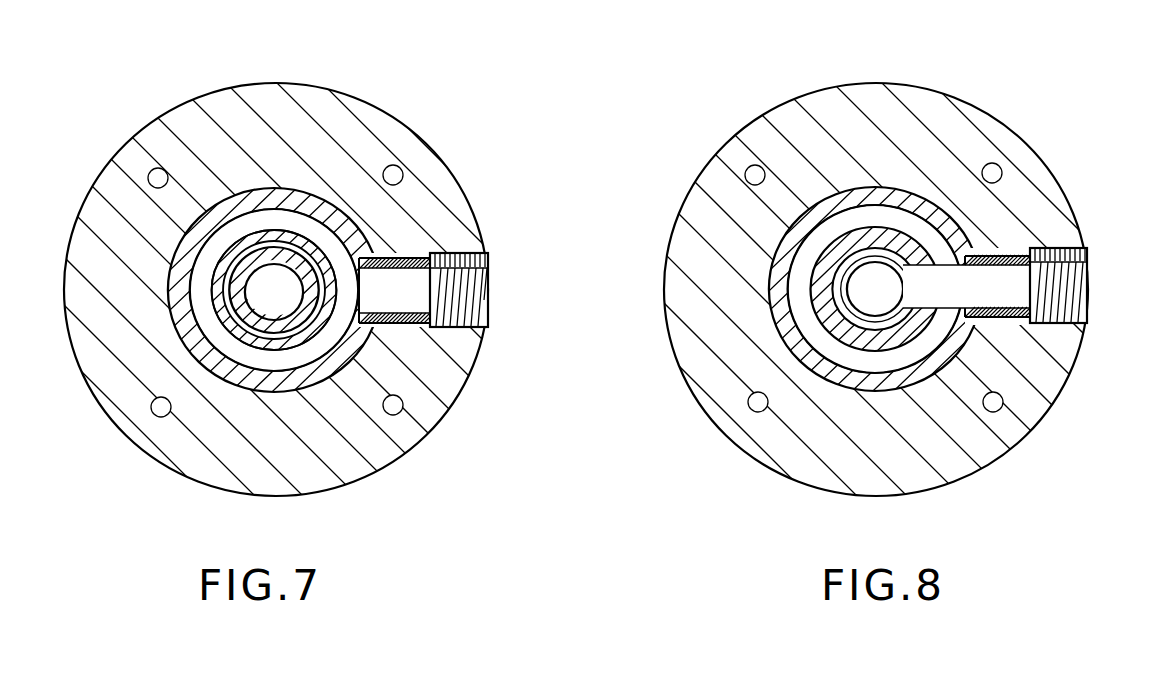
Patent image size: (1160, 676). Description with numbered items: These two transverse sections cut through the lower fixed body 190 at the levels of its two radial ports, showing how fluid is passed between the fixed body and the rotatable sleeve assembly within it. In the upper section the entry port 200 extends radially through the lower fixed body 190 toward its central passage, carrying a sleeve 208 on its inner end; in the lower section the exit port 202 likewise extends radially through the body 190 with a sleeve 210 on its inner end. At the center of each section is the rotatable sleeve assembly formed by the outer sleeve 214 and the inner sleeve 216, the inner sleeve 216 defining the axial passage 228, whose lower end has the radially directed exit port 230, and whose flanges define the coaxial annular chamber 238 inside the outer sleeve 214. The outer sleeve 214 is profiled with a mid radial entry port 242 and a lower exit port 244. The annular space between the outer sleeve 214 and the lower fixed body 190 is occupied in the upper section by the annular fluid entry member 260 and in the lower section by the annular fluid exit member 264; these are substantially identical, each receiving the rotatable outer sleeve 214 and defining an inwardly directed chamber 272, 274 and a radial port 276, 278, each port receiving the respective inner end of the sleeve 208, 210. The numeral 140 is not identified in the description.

In FIG. 7, the valve body 140 is at (437, 395).
In FIG. 8, the lower fixed body 190 is at (1010, 427).
In FIG. 7, the entry port 200 is at (462, 325).
In FIG. 8, the exit port 202 is at (1063, 323).
In FIG. 7, the sleeve 208 is at (395, 262).
In FIG. 8, the sleeve 210 is at (997, 256).
In FIG. 7, the outer sleeve 214 is at (274, 245).
In FIG. 8, the outer sleeve 214 is at (874, 286).
In FIG. 7, the inner sleeve 216 is at (188, 247).
In FIG. 8, the inner sleeve 216 is at (815, 288).
In FIG. 7, the axial passage 228 is at (224, 290).
In FIG. 8, the axial passage 228 is at (801, 298).
In FIG. 8, the exit port 230 is at (875, 342).
In FIG. 7, the annular chamber 238 is at (274, 321).
In FIG. 7, the mid radial entry port 242 is at (289, 308).
In FIG. 8, the lower exit port 244 is at (880, 302).
In FIG. 7, the annular fluid entry member 260 is at (257, 290).
In FIG. 8, the annular fluid exit member 264 is at (875, 289).
In FIG. 7, the inwardly directed chamber 272 is at (177, 290).
In FIG. 8, the inwardly directed chamber 274 is at (804, 270).
In FIG. 7, the radial port 276 is at (391, 320).
In FIG. 8, the radial port 278 is at (976, 314).